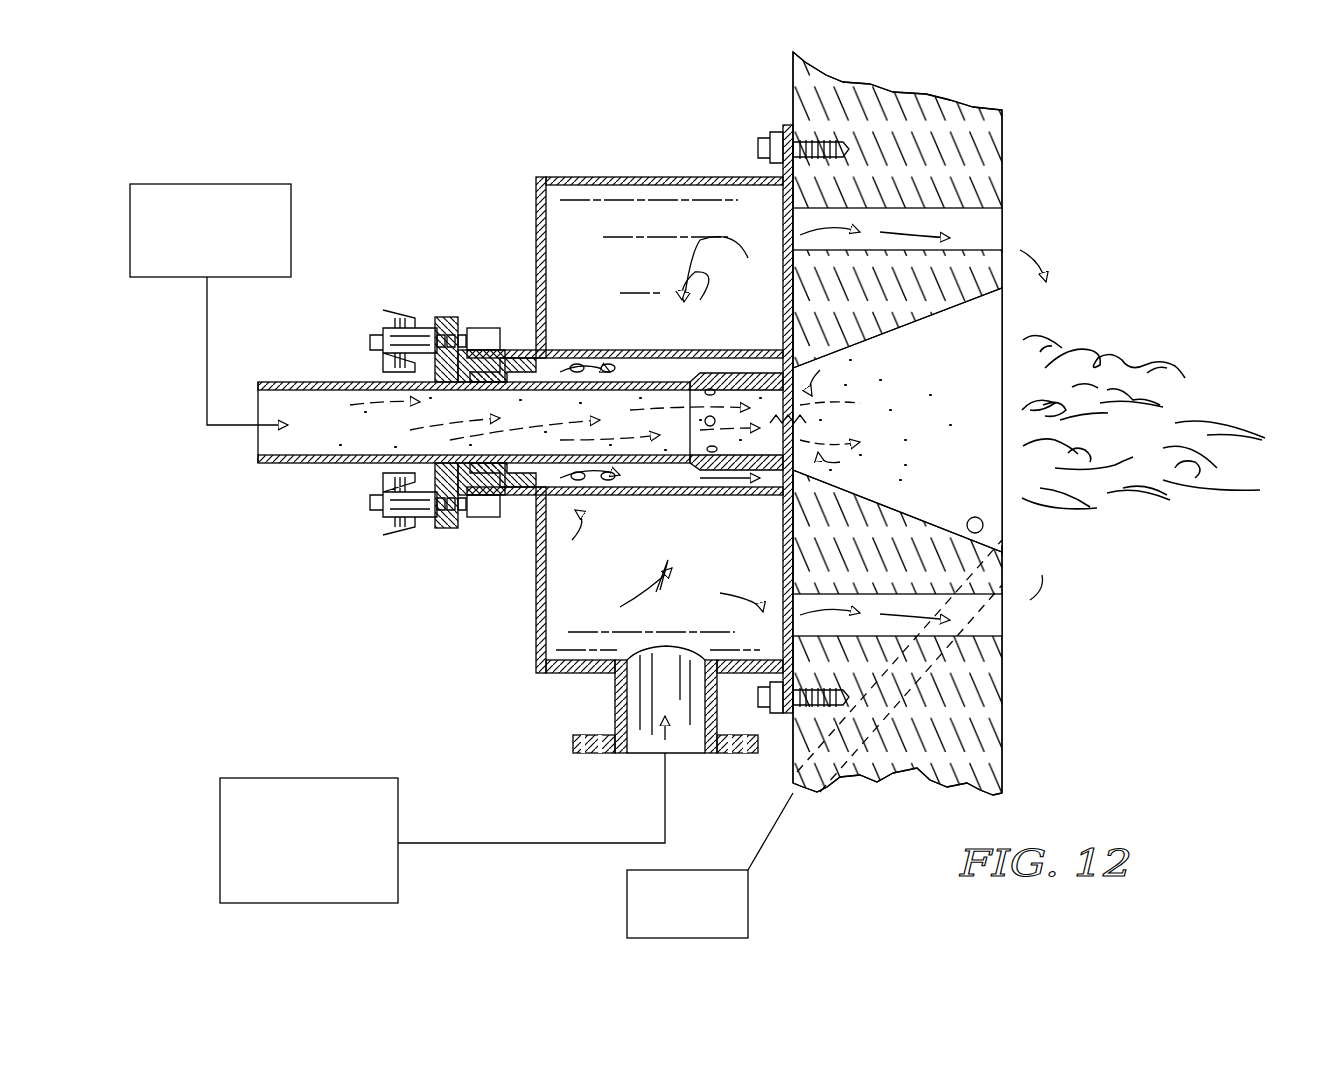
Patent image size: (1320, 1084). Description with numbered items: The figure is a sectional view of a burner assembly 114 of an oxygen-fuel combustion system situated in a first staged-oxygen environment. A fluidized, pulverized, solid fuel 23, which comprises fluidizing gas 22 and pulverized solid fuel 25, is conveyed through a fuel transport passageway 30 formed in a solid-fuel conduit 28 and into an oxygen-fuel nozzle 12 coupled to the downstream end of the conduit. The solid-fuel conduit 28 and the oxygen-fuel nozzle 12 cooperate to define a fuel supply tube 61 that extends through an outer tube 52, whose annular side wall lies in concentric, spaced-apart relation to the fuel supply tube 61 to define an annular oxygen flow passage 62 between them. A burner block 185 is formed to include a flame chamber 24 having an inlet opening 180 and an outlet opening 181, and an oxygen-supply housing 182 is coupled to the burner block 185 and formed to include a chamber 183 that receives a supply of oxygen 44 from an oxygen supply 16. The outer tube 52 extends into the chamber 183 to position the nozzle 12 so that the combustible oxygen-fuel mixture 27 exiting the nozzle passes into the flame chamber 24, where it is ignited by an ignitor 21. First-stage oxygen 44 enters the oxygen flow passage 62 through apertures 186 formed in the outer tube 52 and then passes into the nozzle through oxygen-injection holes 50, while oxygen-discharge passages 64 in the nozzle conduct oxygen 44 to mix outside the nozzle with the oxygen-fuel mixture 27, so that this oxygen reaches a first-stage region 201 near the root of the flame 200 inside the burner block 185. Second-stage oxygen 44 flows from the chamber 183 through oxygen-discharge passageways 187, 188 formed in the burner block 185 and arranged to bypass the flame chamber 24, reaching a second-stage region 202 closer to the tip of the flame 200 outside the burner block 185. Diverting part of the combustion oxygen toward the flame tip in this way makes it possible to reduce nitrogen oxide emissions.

The burner assembly 114 is at (465, 162).
The fluidized, pulverized, solid fuel 23 is at (292, 222).
The oxygen supply 16 is at (275, 782).
The ignitor 21 is at (627, 914).
The solid-fuel conduit 28 is at (274, 382).
The fuel transport passageway 30 is at (310, 398).
The fluidizing gas 22 is at (645, 420).
The pulverized solid fuel 25 is at (341, 438).
The chamber 183 is at (578, 262).
The oxygen-supply housing 182 is at (536, 662).
The outer tube 52 is at (557, 342).
The fuel supply tube 61 is at (545, 347).
The oxygen flow passage 62 is at (676, 362).
The apertures 186 is at (635, 378).
The oxygen-fuel nozzle 12 is at (729, 360).
The inlet opening 180 is at (792, 340).
The oxygen-injection holes 50 is at (670, 487).
The combustible oxygen-fuel mixture 27 is at (752, 477).
The oxygen-discharge passages 64 is at (767, 497).
The oxygen 44 is at (746, 256).
The burner block 185 is at (1006, 142).
The oxygen-discharge passageway 188 is at (1003, 232).
The oxygen-discharge passageway 187 is at (1004, 640).
The flame chamber 24 is at (986, 330).
The flame 200 is at (1108, 352).
The first-stage region 201 is at (868, 380).
The second-stage region 202 is at (1062, 520).
The outlet opening 181 is at (1003, 552).